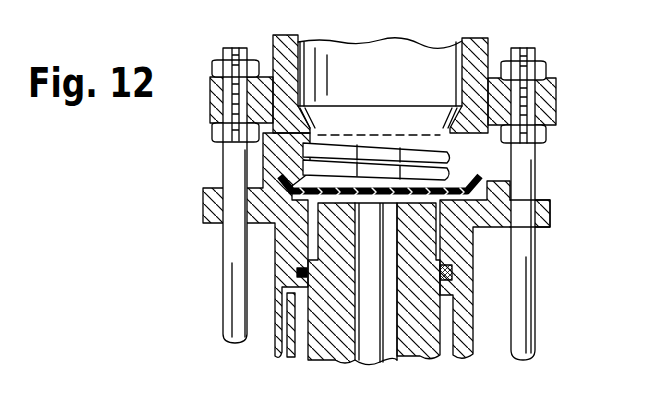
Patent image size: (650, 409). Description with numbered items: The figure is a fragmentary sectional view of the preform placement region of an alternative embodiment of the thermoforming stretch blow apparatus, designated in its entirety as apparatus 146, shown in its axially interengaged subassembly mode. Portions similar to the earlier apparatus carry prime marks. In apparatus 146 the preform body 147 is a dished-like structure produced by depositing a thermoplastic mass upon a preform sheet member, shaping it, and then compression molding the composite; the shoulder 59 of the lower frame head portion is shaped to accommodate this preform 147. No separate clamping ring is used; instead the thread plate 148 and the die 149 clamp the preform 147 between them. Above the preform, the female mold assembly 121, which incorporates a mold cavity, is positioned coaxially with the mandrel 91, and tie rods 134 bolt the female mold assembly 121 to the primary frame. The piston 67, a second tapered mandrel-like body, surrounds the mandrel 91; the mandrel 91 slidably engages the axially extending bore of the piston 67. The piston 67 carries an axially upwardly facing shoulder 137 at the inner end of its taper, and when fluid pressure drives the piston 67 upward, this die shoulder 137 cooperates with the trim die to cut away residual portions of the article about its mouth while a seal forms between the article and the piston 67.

The female mold assembly 121 is at (267, 55).
The apparatus 146 is at (505, 40).
The thread plate 148 is at (445, 152).
The die 149 is at (447, 167).
The preform body 147 is at (548, 196).
The shoulder 59 is at (465, 191).
The shoulder 137 is at (452, 273).
The tie rods 134 is at (228, 248).
The mandrel 91 is at (362, 343).
The piston 67 is at (430, 347).